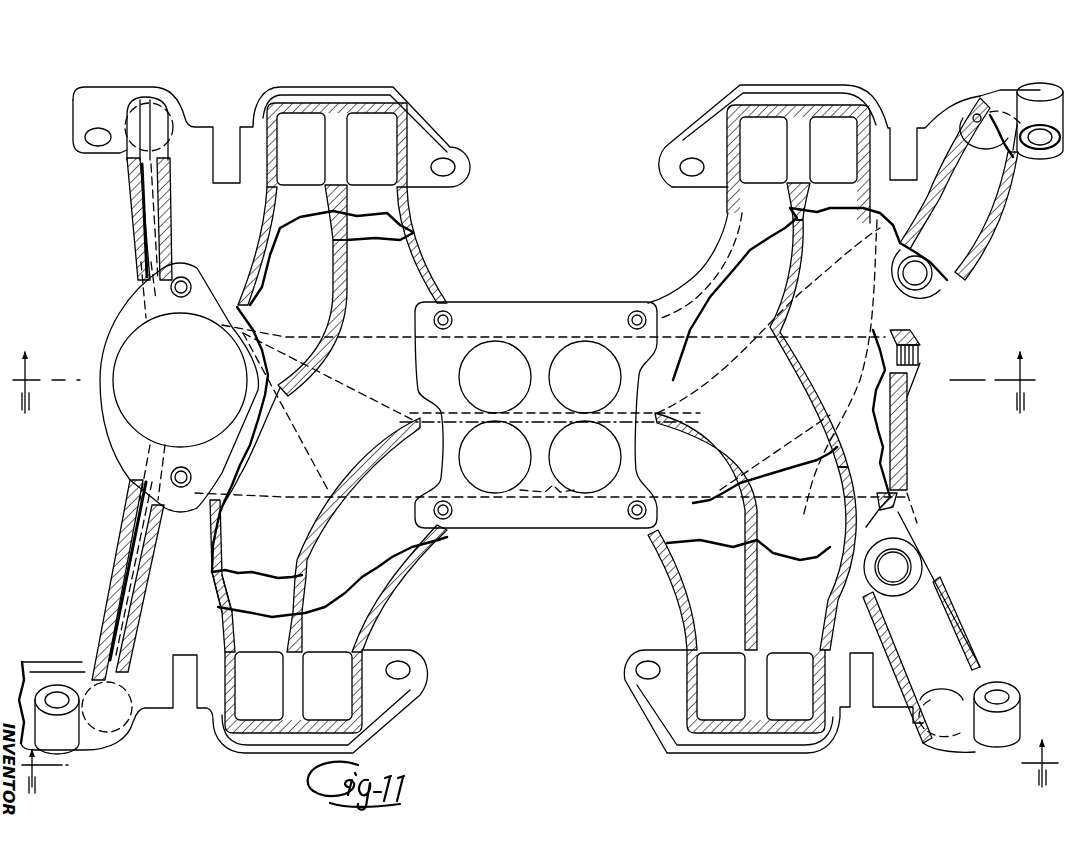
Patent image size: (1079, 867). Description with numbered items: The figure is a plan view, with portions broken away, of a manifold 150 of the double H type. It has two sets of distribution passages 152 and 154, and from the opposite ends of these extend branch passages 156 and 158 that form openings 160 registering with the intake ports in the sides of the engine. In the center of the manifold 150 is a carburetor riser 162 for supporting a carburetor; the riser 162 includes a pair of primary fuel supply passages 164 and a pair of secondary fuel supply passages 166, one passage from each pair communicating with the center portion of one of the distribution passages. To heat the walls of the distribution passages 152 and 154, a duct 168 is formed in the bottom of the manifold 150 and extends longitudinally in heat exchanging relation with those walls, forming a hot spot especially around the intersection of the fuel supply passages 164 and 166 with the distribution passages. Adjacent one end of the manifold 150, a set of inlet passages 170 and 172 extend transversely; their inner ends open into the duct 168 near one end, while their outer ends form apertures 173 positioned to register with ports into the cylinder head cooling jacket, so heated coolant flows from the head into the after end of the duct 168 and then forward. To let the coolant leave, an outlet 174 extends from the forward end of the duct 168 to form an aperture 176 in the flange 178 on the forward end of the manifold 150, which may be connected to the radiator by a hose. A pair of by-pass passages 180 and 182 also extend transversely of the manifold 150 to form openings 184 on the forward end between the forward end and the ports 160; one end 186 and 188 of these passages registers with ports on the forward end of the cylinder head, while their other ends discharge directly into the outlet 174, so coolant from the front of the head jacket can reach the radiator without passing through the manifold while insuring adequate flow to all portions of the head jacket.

The manifold 150 is at (935, 557).
The distribution passage 152 is at (528, 410).
The distribution passage 154 is at (556, 490).
The branch passage 156 is at (280, 218).
The branch passage 158 is at (240, 625).
The opening 160 is at (307, 118).
The carburetor riser 162 is at (590, 313).
The primary fuel supply passage 164 is at (515, 358).
The secondary fuel supply passage 166 is at (613, 377).
The duct 168 is at (736, 465).
The inlet passage 170 is at (977, 241).
The inlet passage 172 is at (950, 635).
The aperture 173 is at (972, 116).
The outlet 174 is at (122, 352).
The aperture 176 is at (123, 393).
The flange 178 is at (144, 318).
The by-pass passage 180 is at (157, 210).
The by-pass passage 182 is at (137, 567).
The opening 184 is at (131, 112).
The end 186 is at (172, 115).
The end 188 is at (107, 727).